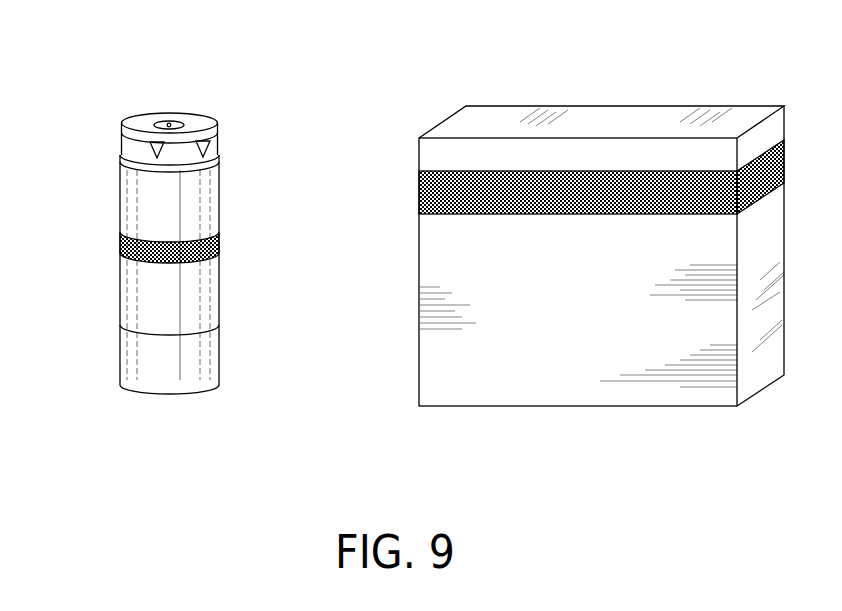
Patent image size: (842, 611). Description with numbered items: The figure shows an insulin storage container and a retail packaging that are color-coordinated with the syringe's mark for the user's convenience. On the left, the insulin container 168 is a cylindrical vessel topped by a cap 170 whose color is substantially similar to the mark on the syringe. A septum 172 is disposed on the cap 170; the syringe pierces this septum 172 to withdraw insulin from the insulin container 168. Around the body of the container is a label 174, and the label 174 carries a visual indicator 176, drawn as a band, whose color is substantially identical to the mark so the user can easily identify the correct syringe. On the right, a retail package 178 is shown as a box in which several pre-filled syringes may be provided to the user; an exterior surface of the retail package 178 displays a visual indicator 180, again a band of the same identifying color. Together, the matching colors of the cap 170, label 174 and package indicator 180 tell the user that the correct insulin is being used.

The insulin container 168 is at (150, 108).
The cap 170 is at (220, 147).
The septum 172 is at (181, 126).
The label 174 is at (152, 297).
The visual indicator 176 is at (138, 250).
The retail package 178 is at (444, 108).
The visual indicator 180 is at (419, 195).